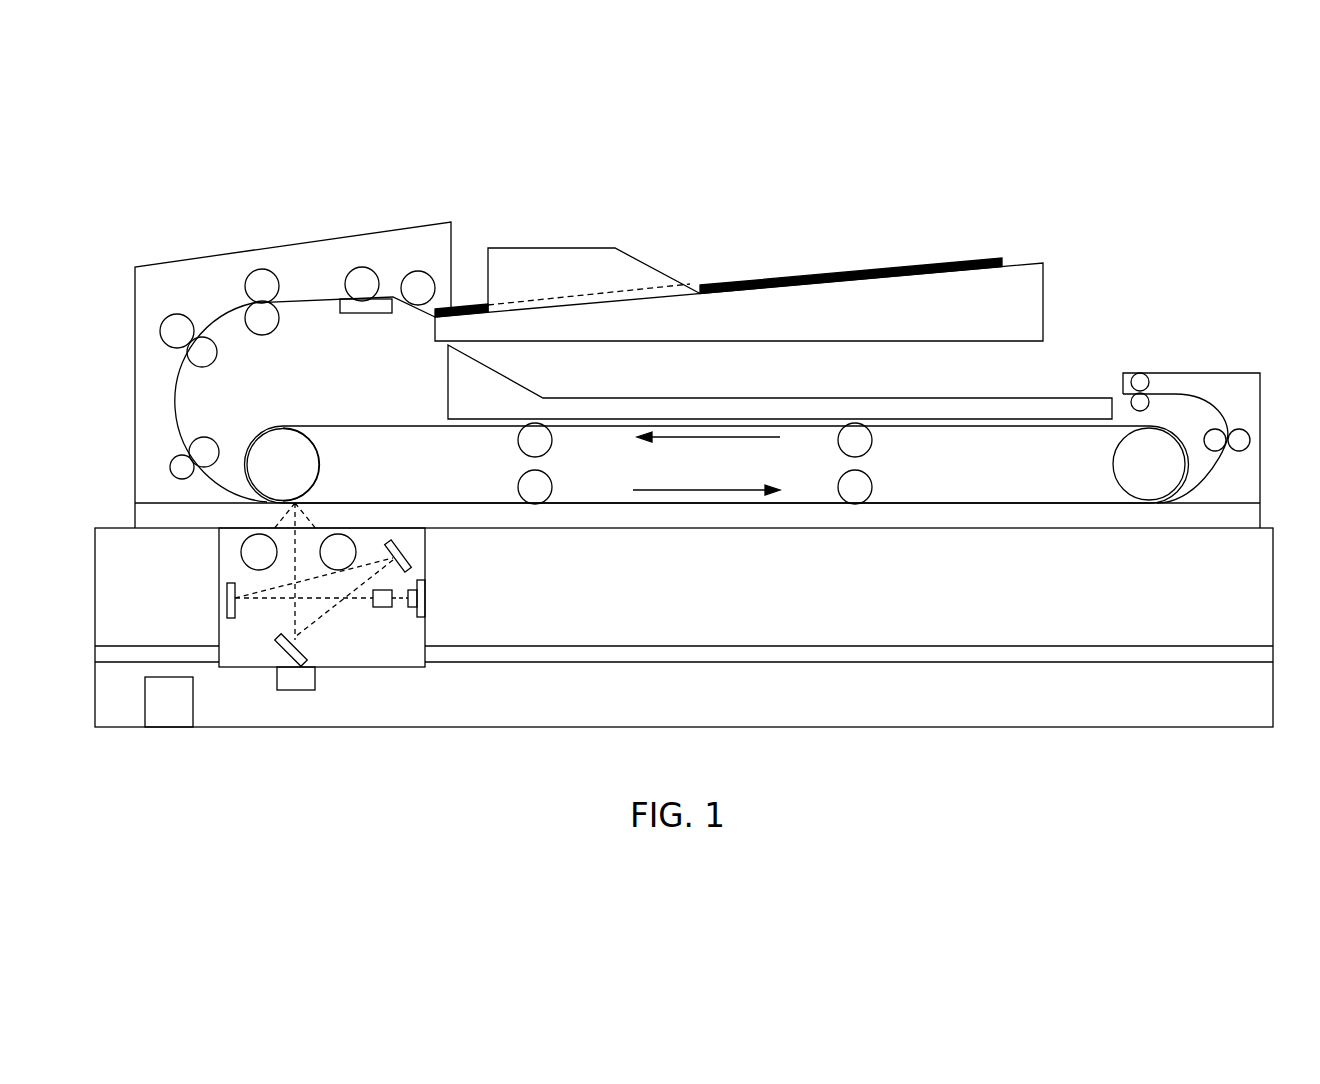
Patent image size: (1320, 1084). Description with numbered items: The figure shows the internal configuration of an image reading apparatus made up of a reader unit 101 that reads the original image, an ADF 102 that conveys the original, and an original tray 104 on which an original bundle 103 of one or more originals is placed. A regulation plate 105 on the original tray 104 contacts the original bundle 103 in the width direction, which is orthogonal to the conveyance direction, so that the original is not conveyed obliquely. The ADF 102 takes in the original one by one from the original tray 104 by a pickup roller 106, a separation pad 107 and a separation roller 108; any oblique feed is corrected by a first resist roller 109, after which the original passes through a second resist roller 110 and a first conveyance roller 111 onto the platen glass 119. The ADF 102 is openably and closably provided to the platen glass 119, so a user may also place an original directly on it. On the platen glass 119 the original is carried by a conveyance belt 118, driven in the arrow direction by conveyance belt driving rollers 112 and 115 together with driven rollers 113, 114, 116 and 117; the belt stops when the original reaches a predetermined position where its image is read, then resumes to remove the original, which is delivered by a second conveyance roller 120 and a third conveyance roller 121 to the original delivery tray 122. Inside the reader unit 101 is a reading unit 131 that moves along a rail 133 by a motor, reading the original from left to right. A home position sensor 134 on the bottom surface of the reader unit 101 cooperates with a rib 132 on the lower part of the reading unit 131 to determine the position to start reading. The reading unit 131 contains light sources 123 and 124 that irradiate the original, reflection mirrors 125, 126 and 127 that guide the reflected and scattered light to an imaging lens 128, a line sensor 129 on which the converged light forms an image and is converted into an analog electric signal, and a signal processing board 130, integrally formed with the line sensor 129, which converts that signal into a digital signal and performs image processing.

The reader unit 101 is at (95, 570).
The ADF 102 is at (135, 296).
The original bundle 103 is at (1003, 260).
The original tray 104 is at (1043, 300).
The regulation plate 105 is at (625, 248).
The pickup roller 106 is at (430, 277).
The separation pad 107 is at (373, 313).
The separation roller 108 is at (348, 271).
The first resist roller 109 is at (255, 270).
The second resist roller 110 is at (163, 318).
The first conveyance roller 111 is at (218, 442).
The conveyance belt driving roller 112 is at (319, 478).
The driven roller 113 is at (518, 491).
The driven roller 114 is at (872, 491).
The conveyance belt driving roller 115 is at (1113, 472).
The driven roller 116 is at (872, 447).
The driven roller 117 is at (518, 446).
The conveyance belt 118 is at (317, 425).
The platen glass 119 is at (522, 518).
The second conveyance roller 120 is at (1252, 438).
The third conveyance roller 121 is at (1153, 380).
The original delivery tray 122 is at (790, 398).
The light source 123 is at (241, 556).
The light source 124 is at (350, 538).
The reflection mirror 125 is at (278, 640).
The reflection mirror 126 is at (408, 556).
The reflection mirror 127 is at (226, 620).
The imaging lens 128 is at (380, 608).
The line sensor 129 is at (412, 608).
The signal processing board 130 is at (425, 586).
The reading unit 131 is at (234, 668).
The rib 132 is at (297, 690).
The rail 133 is at (640, 645).
The home position sensor 134 is at (145, 705).